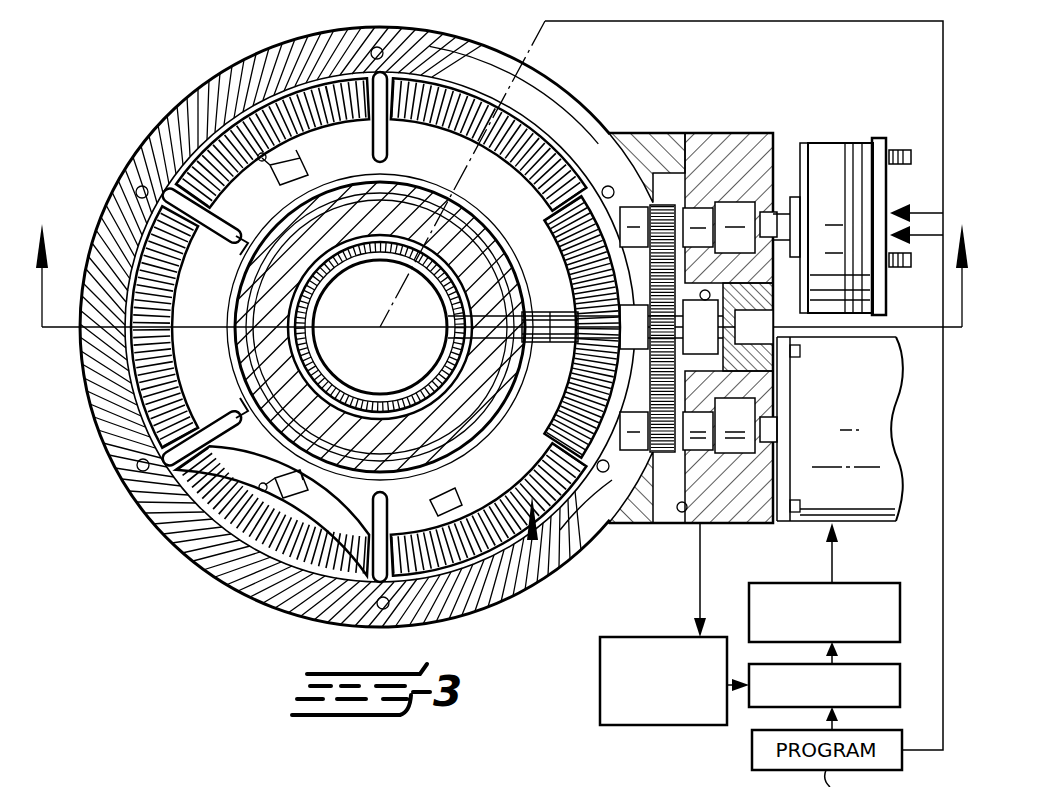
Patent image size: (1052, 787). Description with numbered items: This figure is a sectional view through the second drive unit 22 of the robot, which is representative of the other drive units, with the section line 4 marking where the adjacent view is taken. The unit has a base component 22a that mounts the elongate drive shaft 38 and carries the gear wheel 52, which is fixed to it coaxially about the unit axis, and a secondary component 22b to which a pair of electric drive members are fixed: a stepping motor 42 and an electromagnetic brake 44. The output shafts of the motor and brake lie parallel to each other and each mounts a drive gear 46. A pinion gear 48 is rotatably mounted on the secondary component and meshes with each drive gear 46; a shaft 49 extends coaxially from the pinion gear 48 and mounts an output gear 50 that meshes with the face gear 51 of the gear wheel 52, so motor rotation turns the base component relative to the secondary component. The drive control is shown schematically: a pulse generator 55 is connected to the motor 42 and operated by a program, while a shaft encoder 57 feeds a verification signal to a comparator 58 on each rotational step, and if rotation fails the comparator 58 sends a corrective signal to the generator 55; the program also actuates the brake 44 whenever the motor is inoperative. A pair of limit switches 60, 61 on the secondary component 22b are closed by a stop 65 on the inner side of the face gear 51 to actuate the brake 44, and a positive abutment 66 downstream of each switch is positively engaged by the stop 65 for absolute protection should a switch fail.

The section line 4- 4 is at (499, 259).
The second drive unit 22 is at (230, 58).
The base component 22a is at (412, 192).
The secondary component 22b is at (150, 138).
The drive shaft 38 is at (382, 262).
The electric drive member 42 is at (862, 404).
The electric drive member 44 is at (834, 166).
The drive gear 46 is at (660, 205).
The pinion gear 48 is at (648, 268).
The shaft 49 is at (752, 324).
The output gear 50 is at (585, 370).
The face gear 51 is at (532, 462).
The gear wheel 52 is at (532, 505).
The pulse generator 55 is at (790, 583).
The shaft encoder 57 is at (600, 682).
The comparator 58 is at (902, 687).
The limit switch 60 is at (302, 163).
The limit switch 61 is at (305, 488).
The stop 65 is at (432, 504).
The positive abutment 66 is at (234, 243).